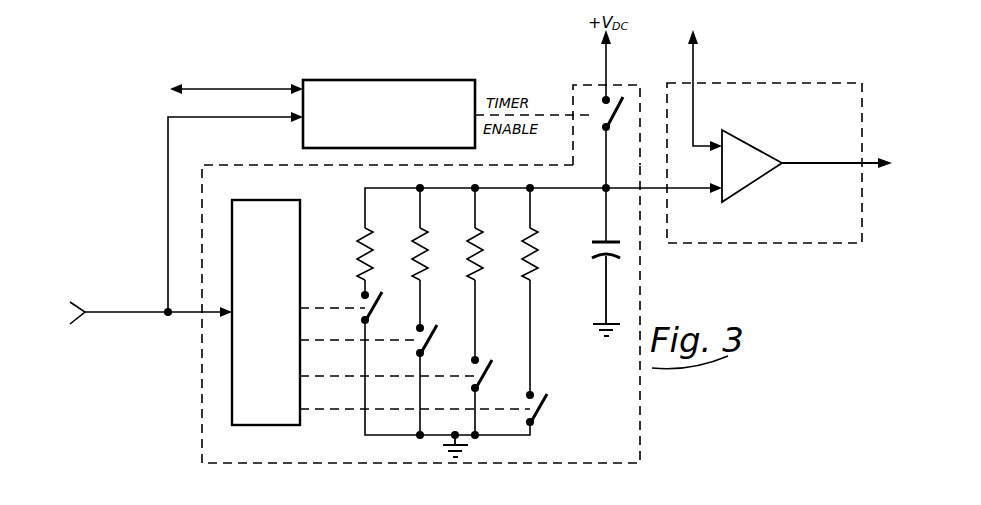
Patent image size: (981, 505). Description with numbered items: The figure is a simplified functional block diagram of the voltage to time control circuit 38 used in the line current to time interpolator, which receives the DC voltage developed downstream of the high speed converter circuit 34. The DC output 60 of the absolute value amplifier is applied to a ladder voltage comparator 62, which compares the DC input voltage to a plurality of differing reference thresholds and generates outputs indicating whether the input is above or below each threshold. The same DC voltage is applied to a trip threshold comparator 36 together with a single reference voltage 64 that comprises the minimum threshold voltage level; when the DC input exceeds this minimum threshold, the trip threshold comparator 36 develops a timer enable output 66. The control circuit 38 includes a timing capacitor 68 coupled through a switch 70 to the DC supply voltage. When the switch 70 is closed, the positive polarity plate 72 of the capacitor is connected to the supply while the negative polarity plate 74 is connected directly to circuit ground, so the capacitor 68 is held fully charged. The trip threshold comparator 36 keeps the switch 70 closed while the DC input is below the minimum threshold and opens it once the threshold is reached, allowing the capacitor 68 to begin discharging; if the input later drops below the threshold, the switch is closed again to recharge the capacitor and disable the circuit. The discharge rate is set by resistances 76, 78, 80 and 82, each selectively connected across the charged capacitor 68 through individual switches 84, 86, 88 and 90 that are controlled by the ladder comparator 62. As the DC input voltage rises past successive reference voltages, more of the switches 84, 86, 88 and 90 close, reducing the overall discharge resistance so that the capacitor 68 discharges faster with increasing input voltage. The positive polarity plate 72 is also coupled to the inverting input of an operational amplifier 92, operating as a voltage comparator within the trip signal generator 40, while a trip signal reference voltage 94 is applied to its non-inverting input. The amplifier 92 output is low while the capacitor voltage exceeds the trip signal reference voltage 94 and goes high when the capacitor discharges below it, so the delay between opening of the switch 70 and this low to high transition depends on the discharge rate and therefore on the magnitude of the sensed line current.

The high speed converter circuit 34 is at (106, 2).
The trip threshold comparator 36 is at (437, 85).
The voltage to time control circuit 38 is at (205, 378).
The trip signal generator 40 is at (790, 232).
The DC output 60 is at (100, 318).
The ladder voltage comparator 62 is at (268, 404).
The reference voltage 64 is at (252, 90).
The timer enable output 66 is at (588, 113).
The timing capacitor 68 is at (626, 250).
The switch 70 is at (618, 90).
The positive polarity plate 72 is at (601, 240).
The negative polarity plate 74 is at (600, 258).
The resistance 76 is at (359, 241).
The resistance 78 is at (414, 242).
The resistance 80 is at (469, 242).
The resistance 82 is at (523, 242).
The switch 84 is at (386, 308).
The switch 86 is at (439, 343).
The switch 88 is at (493, 377).
The switch 90 is at (548, 410).
The operational amplifier 92 is at (748, 160).
The trip signal reference voltage 94 is at (689, 112).